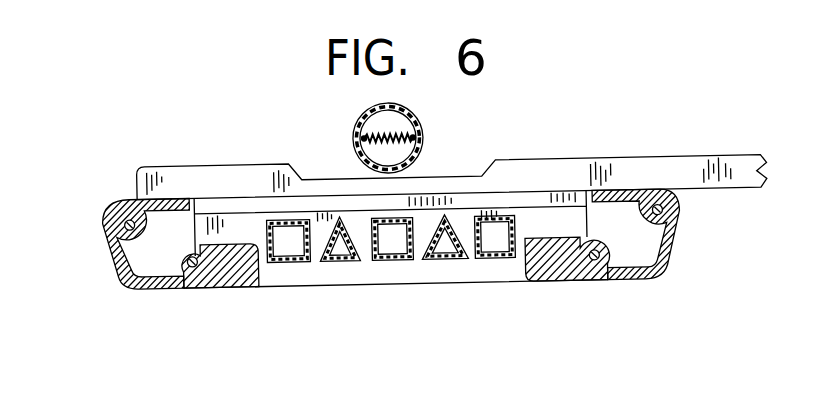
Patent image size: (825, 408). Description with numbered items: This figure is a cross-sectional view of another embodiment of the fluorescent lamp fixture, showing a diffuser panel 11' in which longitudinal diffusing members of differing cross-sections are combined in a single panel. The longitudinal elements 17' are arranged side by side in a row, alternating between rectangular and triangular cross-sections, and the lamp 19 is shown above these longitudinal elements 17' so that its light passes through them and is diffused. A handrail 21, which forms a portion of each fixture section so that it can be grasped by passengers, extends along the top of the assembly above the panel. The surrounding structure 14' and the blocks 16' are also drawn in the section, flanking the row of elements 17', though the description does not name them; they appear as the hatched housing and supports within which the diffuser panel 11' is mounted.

The diffuser panel 11' is at (390, 221).
The housing 14' is at (390, 244).
The mounting blocks 16' is at (392, 281).
The longitudinal elements 17' is at (391, 265).
The lamp 19 is at (426, 136).
The handrail 21 is at (675, 168).